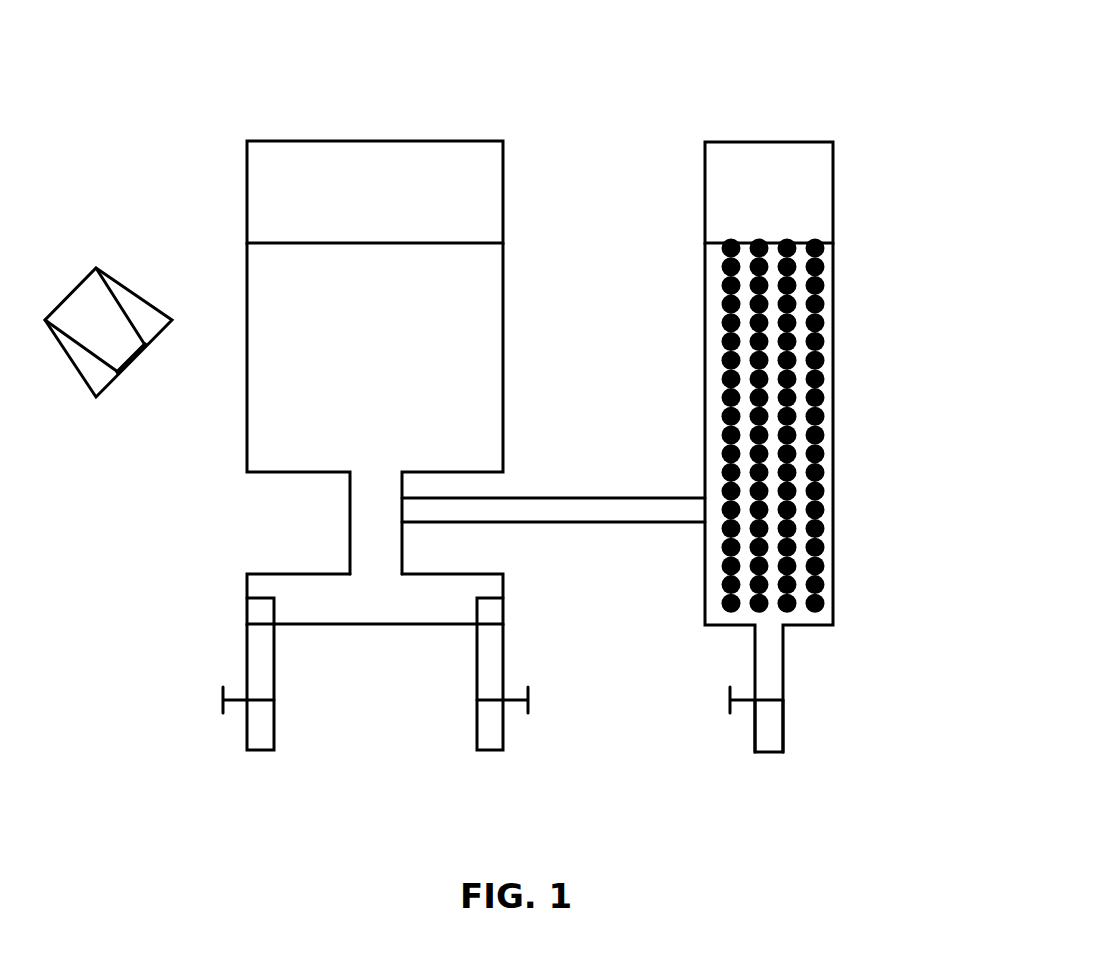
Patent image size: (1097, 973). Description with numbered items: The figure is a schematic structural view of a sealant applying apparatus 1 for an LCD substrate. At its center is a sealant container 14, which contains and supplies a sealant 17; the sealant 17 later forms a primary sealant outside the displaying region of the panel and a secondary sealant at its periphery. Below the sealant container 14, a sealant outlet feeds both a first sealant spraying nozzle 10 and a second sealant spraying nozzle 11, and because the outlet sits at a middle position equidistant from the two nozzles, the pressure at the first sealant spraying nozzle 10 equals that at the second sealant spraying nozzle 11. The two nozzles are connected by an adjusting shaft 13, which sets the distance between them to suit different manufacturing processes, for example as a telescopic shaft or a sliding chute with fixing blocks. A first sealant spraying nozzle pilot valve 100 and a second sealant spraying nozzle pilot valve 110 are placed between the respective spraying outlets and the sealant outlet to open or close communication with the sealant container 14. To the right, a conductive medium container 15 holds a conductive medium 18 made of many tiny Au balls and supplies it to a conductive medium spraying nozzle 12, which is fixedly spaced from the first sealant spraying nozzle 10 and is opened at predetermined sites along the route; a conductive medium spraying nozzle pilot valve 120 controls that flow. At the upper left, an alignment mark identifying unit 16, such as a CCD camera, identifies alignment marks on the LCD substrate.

The sealant applying apparatus 1 is at (508, 55).
The first sealant spraying nozzle 10 is at (487, 725).
The first sealant spraying nozzle pilot valve 100 is at (493, 698).
The second sealant spraying nozzle 11 is at (258, 725).
The second sealant spraying nozzle pilot valve 110 is at (263, 698).
The conductive medium spraying nozzle 12 is at (766, 725).
The conductive medium spraying nozzle pilot valve 120 is at (768, 697).
The adjusting shaft 13 is at (325, 598).
The sealant container 14 is at (460, 218).
The conductive medium container 15 is at (807, 218).
The alignment mark identifying unit 16 is at (137, 292).
The sealant 17 is at (467, 372).
The conductive medium 18 is at (803, 443).